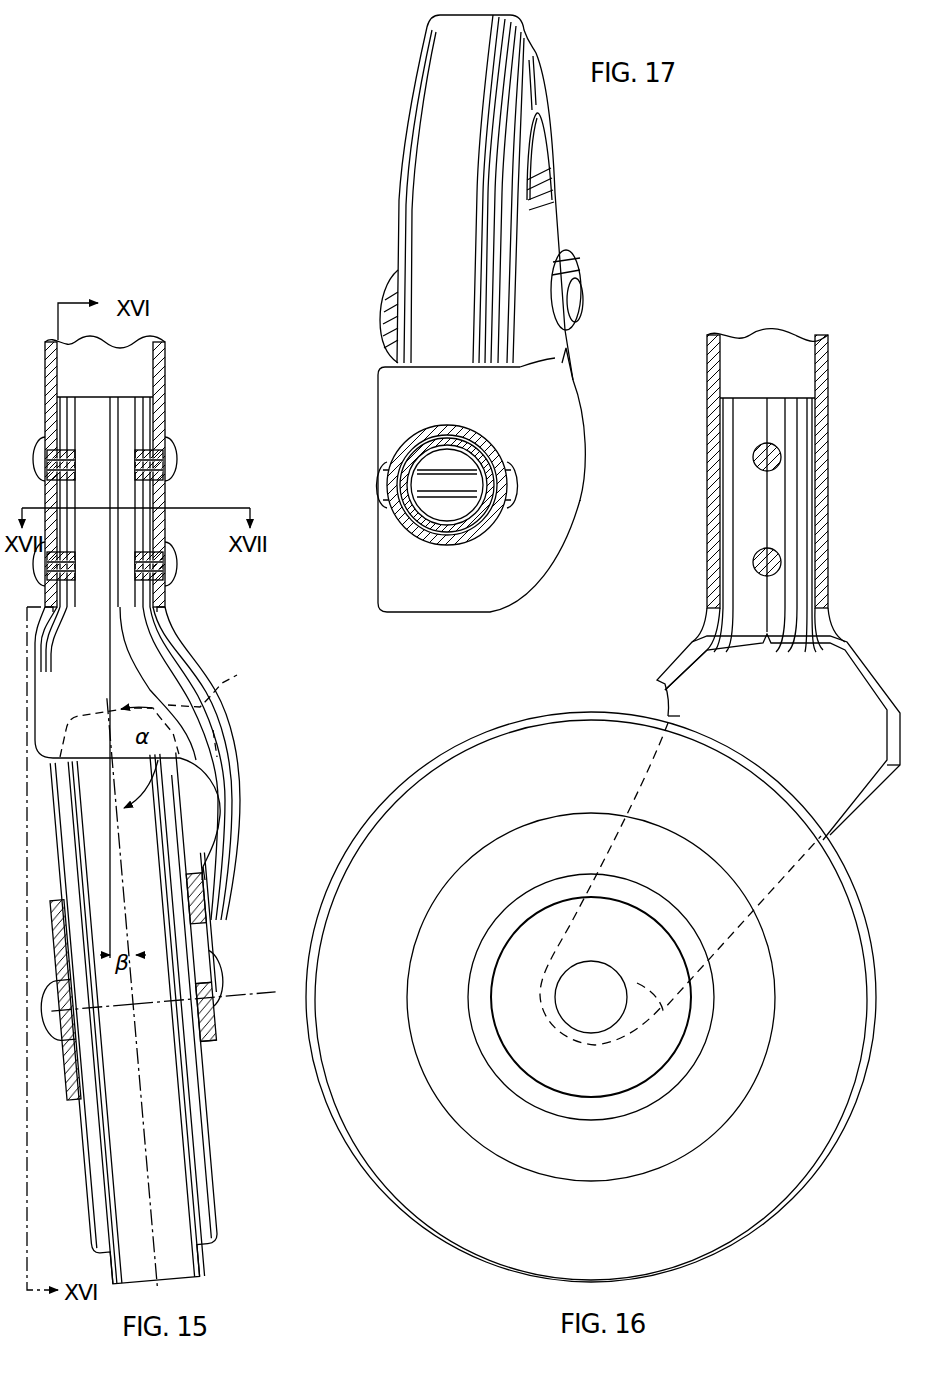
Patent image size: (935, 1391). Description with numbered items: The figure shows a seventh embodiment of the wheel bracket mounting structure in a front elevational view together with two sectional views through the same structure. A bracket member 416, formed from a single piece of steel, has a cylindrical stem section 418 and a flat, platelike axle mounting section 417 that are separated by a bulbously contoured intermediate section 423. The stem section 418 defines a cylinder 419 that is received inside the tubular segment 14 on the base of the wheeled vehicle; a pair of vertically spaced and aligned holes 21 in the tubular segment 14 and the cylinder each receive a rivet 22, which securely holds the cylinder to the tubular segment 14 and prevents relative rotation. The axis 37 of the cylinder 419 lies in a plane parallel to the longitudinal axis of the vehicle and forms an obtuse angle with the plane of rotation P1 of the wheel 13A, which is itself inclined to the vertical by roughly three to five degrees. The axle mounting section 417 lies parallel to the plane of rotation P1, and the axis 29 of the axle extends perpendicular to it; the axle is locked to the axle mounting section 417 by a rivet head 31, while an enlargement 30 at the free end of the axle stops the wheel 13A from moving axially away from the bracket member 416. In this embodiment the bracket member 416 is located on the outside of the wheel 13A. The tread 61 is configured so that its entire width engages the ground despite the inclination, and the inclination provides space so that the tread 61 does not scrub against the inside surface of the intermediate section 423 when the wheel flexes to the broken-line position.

In FIG. 15, the wheel 13A is at (237, 676).
In FIG. 17, the wheel 13A is at (553, 153).
In FIG. 16, the wheel 13A is at (416, 1191).
In FIG. 15, the tubular segment 14 is at (162, 388).
In FIG. 17, the tubular segment 14 is at (462, 433).
In FIG. 16, the tubular segment 14 is at (824, 441).
In FIG. 15, the holes 21 is at (170, 452).
In FIG. 15, the rivet 22 is at (172, 457).
In FIG. 17, the rivet 22 is at (513, 486).
In FIG. 16, the rivet 22 is at (778, 455).
In FIG. 15, the axis of the axle 29 is at (164, 994).
In FIG. 15, the enlargement 30 is at (56, 1030).
In FIG. 17, the enlargement 30 is at (380, 302).
In FIG. 16, the enlargement 30 is at (582, 1020).
In FIG. 15, the rivet head 31 is at (214, 985).
In FIG. 17, the rivet head 31 is at (583, 295).
In FIG. 15, the axis of the cylinder 37 is at (118, 422).
In FIG. 17, the axis of the cylinder 37 is at (447, 485).
In FIG. 15, the tread 61 is at (190, 1285).
In FIG. 15, the plane of rotation P1 is at (146, 1112).
In FIG. 15, the bracket member 416 is at (244, 718).
In FIG. 17, the bracket member 416 is at (583, 407).
In FIG. 16, the bracket member 416 is at (665, 670).
In FIG. 15, the axle mounting section 417 is at (208, 940).
In FIG. 17, the axle mounting section 417 is at (571, 348).
In FIG. 16, the axle mounting section 417 is at (652, 1012).
In FIG. 15, the stem section 418 is at (143, 494).
In FIG. 17, the stem section 418 is at (486, 454).
In FIG. 16, the stem section 418 is at (801, 528).
In FIG. 15, the cylinder 419 is at (97, 412).
In FIG. 17, the cylinder 419 is at (412, 458).
In FIG. 16, the cylinder 419 is at (796, 425).
In FIG. 15, the intermediate section 423 is at (240, 771).
In FIG. 17, the intermediate section 423 is at (578, 468).
In FIG. 16, the intermediate section 423 is at (682, 707).